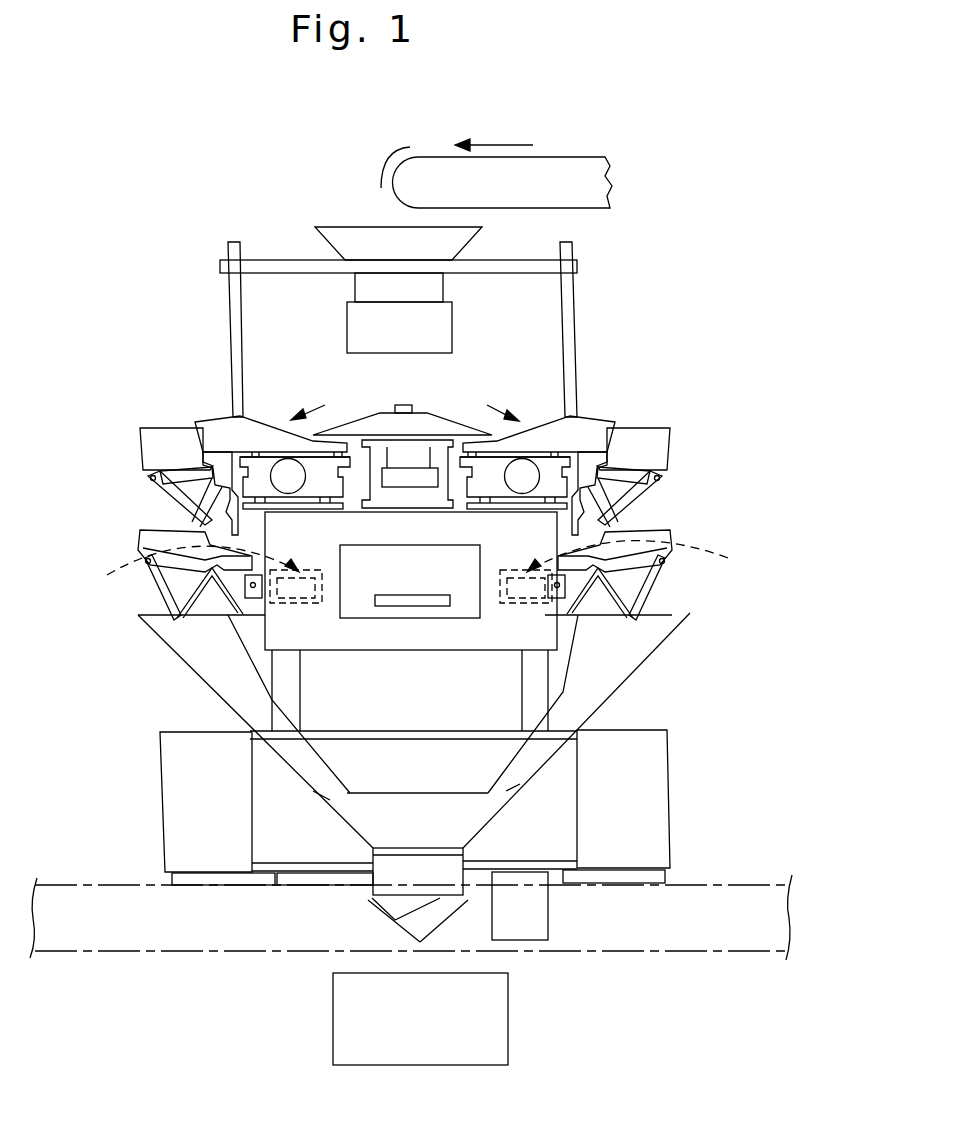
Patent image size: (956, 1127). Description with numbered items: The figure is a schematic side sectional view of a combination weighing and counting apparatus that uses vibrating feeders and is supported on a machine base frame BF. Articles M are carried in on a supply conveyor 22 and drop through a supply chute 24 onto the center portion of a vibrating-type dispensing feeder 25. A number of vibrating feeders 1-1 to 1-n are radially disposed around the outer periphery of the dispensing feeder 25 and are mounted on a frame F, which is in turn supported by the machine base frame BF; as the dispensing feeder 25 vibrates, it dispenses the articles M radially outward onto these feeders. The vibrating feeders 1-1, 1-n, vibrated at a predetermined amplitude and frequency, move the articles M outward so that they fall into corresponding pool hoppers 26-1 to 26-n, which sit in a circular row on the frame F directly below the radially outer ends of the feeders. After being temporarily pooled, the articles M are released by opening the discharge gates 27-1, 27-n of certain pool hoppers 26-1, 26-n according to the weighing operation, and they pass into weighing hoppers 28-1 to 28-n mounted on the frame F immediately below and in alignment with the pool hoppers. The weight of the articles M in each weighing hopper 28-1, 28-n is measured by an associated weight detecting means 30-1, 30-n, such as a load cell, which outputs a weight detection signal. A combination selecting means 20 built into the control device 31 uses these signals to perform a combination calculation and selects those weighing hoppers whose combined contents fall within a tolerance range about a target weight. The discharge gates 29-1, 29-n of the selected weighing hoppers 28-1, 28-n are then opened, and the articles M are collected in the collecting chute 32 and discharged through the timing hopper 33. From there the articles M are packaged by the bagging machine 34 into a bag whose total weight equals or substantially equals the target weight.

The supply conveyor 22 is at (572, 157).
The articles M is at (381, 170).
The supply chute 24 is at (345, 227).
The dispensing feeder 25 is at (455, 413).
The vibrating feeder 1-1 is at (222, 430).
The vibrating feeder 1-n is at (590, 425).
The pool hopper 26-1 is at (148, 450).
The pool hopper 26-n is at (660, 438).
The discharge gate 27-1 is at (157, 498).
The discharge gate 27-n is at (660, 497).
The weighing hopper 28-1 is at (148, 545).
The weighing hopper 28-n is at (662, 522).
The discharge gate 29-1 is at (142, 593).
The discharge gate 29-n is at (657, 588).
The weight detecting means 30-1 is at (173, 568).
The weight detecting means 30-n is at (663, 558).
The control device 31 is at (448, 545).
The combination selecting means 20 is at (452, 604).
The frame F is at (417, 627).
The collecting chute 32 is at (183, 663).
The timing hopper 33 is at (373, 903).
The bagging machine 34 is at (508, 1017).
The machine base frame BF is at (673, 950).